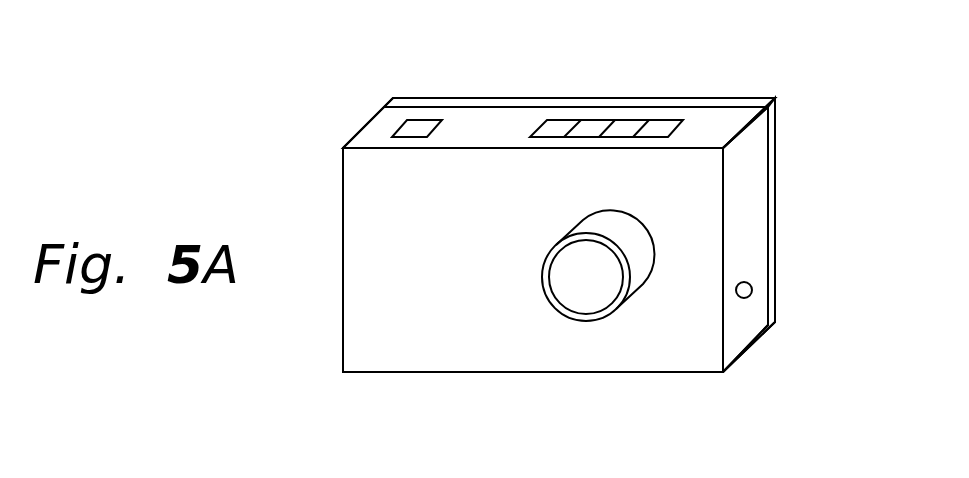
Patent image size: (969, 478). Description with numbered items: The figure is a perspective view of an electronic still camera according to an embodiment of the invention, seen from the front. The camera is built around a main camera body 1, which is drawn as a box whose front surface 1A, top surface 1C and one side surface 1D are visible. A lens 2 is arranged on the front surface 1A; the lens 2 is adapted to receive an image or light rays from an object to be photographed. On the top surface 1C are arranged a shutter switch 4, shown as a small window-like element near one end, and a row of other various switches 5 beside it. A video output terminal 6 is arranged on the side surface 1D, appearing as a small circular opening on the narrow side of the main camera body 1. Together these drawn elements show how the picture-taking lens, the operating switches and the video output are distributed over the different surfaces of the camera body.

The main camera body 1 is at (580, 68).
The front surface 1A is at (430, 343).
The top surface 1C is at (488, 122).
The side surface 1D is at (747, 228).
The lens 2 is at (587, 303).
The shutter switch 4 is at (418, 128).
The switches 5 is at (625, 130).
The video output terminal 6 is at (744, 290).